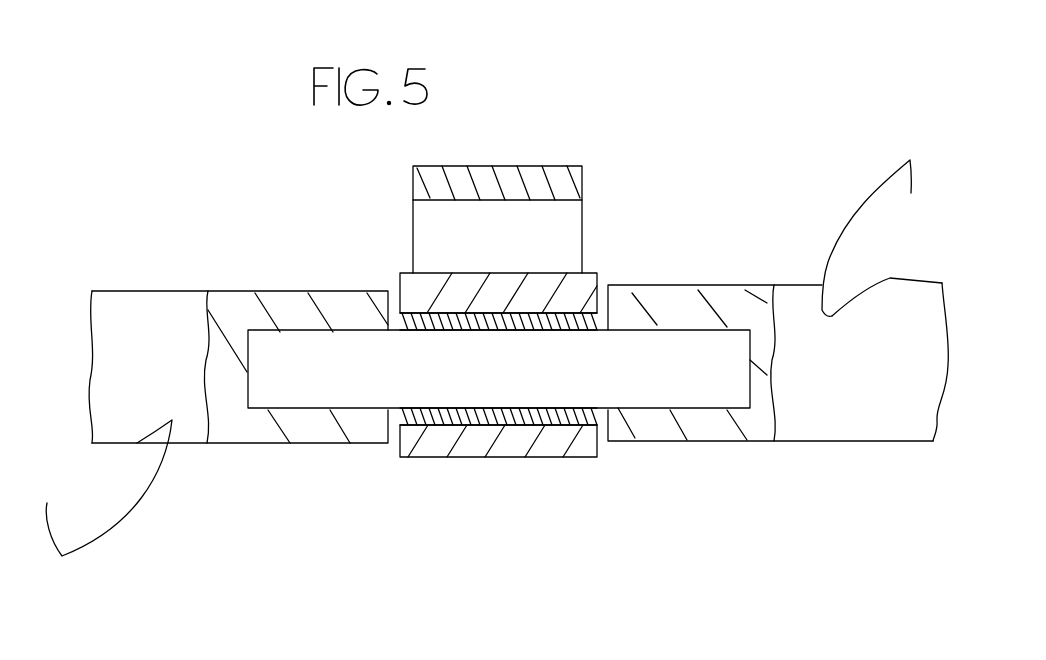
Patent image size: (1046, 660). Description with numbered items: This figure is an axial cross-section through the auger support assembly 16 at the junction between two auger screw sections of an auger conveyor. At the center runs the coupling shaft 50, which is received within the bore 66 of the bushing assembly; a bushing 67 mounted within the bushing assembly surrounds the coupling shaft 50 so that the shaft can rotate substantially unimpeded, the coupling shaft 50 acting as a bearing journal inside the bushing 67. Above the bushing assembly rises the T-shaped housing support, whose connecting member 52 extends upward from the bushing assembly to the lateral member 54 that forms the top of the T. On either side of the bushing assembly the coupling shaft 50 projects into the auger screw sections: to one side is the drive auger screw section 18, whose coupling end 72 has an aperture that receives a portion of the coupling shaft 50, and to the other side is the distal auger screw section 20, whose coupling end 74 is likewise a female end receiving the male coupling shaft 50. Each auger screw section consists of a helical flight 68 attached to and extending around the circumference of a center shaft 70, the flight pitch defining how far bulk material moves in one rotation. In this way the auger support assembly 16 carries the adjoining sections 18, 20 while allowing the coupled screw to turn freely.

The auger support assembly 16 is at (463, 507).
The drive auger screw section 18 is at (898, 475).
The distal auger screw section 20 is at (245, 480).
The coupling shaft 50 is at (672, 380).
The connecting member 52 is at (585, 232).
The lateral member 54 is at (530, 173).
The bore 66 is at (411, 474).
The bushing 67 is at (523, 413).
The helical flight 68 is at (102, 515).
The center shaft 70 is at (158, 305).
The coupling end 72 is at (675, 303).
The coupling end 74 is at (328, 428).